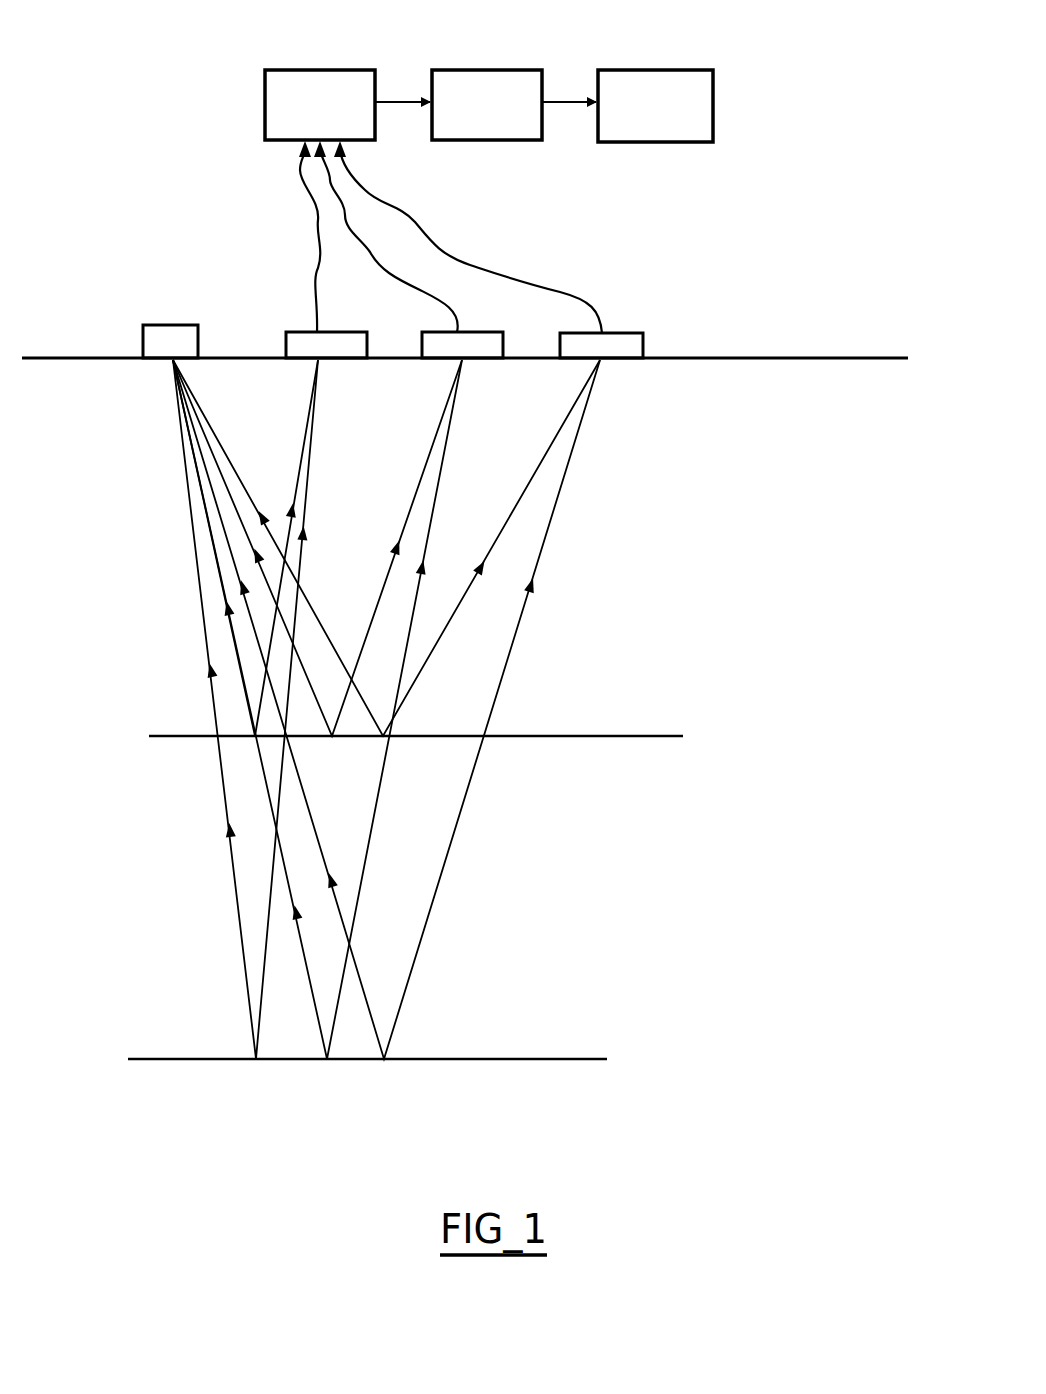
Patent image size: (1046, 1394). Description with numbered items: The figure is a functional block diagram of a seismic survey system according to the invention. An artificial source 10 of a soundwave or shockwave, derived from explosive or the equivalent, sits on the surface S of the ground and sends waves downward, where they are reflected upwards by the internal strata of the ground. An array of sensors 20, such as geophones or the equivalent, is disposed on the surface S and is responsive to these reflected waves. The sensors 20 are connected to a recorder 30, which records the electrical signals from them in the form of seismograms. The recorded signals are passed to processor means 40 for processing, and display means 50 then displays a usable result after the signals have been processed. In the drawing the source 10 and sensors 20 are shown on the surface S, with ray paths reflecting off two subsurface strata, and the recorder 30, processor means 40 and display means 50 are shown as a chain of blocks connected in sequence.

The artificial source 10 is at (162, 325).
The sensors 20 is at (302, 332).
The recorder 30 is at (320, 70).
The processor means 40 is at (488, 70).
The display means 50 is at (650, 70).
The surface S is at (787, 348).